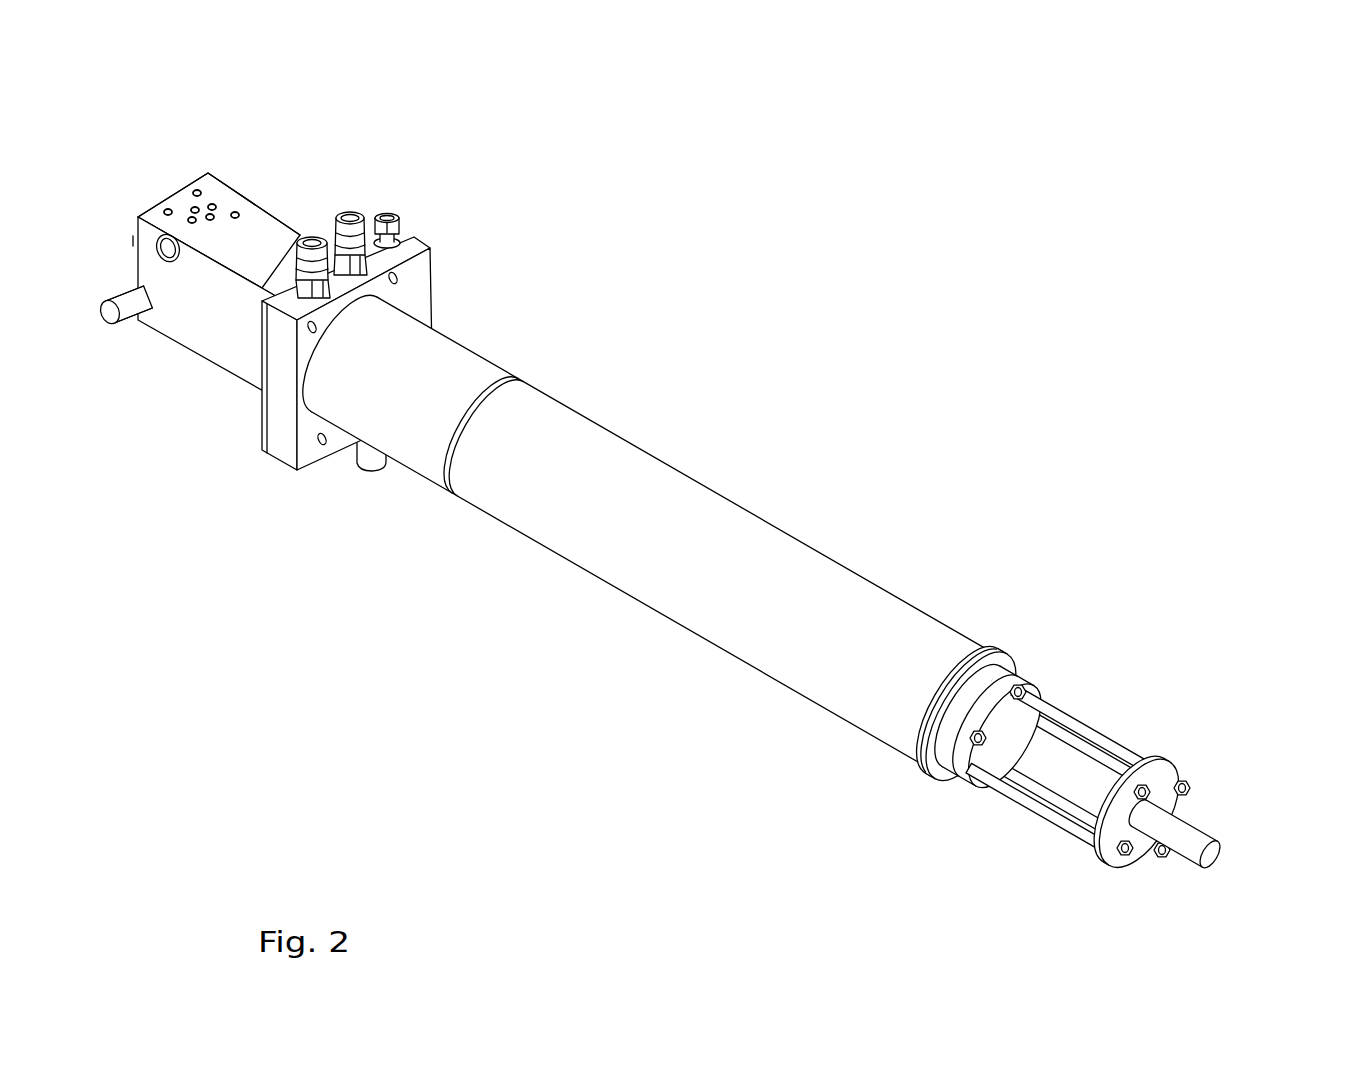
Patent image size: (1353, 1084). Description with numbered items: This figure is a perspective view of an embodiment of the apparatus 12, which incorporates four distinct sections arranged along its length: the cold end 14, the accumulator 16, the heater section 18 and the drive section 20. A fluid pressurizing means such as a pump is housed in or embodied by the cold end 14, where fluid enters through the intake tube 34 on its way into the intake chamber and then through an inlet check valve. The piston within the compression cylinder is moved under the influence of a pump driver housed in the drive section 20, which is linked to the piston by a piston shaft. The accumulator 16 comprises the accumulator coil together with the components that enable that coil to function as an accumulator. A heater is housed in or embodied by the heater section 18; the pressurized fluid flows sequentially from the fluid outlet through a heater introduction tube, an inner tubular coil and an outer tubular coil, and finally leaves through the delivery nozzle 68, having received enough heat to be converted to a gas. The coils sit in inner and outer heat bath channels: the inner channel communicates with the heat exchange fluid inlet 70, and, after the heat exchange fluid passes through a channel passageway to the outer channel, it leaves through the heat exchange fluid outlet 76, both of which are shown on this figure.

The apparatus 12 is at (714, 494).
The cold end 14 is at (1042, 792).
The accumulator 16 is at (685, 580).
The heater section 18 is at (488, 369).
The drive section 20 is at (195, 366).
The intake tube 34 is at (1232, 759).
The delivery nozzle 68 is at (425, 177).
The heat exchange fluid inlet 70 is at (283, 155).
The heat exchange fluid outlet 76 is at (248, 192).